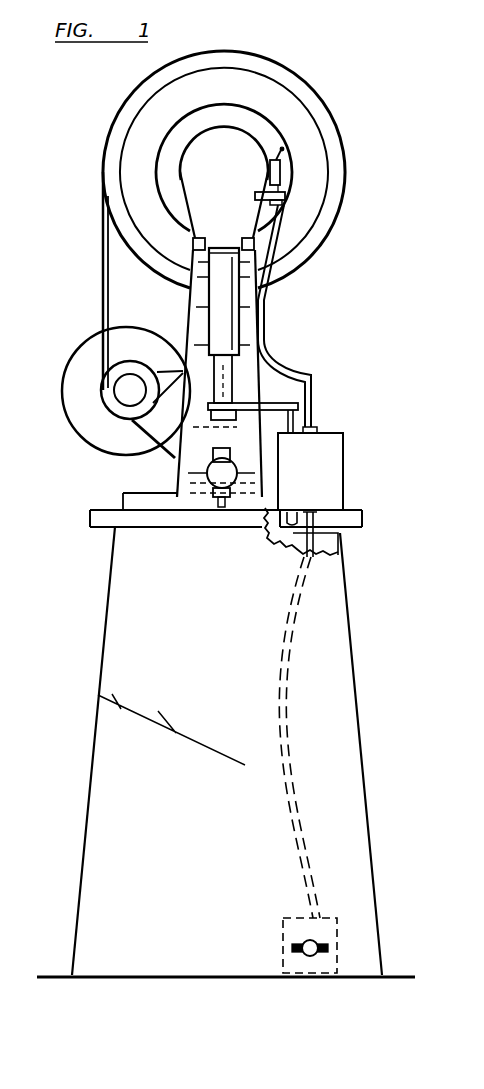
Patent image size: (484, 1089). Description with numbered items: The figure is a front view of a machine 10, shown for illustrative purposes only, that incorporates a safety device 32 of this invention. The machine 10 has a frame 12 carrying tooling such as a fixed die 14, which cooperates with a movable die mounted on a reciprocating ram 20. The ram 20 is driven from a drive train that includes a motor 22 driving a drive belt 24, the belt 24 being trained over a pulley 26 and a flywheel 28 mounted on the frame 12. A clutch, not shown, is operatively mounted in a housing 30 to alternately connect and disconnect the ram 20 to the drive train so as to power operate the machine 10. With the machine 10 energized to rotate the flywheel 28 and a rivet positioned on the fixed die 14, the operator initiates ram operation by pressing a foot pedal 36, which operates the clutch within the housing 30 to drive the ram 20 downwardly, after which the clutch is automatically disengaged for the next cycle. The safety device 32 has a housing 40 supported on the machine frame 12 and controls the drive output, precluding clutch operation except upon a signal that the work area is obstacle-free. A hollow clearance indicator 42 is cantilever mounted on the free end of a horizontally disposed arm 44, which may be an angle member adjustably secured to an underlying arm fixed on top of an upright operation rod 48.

The machine 10 is at (220, 496).
The frame 12 is at (88, 517).
The fixed die 14 is at (205, 450).
The reciprocating ram 20 is at (242, 376).
The motor 22 is at (83, 358).
The drive belt 24 is at (103, 250).
The pulley 26 is at (106, 401).
The flywheel 28 is at (330, 197).
The housing 30 is at (243, 160).
The safety device 32 is at (325, 486).
The foot pedal 36 is at (297, 948).
The housing 40 is at (333, 433).
The clearance indicator 42 is at (205, 410).
The arm 44 is at (264, 403).
The operation rod 48 is at (278, 424).